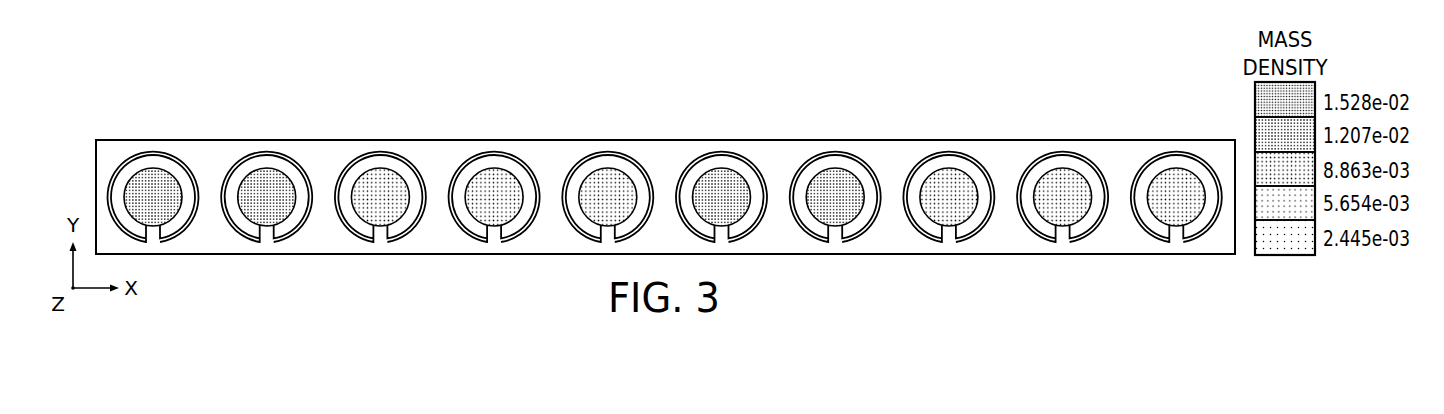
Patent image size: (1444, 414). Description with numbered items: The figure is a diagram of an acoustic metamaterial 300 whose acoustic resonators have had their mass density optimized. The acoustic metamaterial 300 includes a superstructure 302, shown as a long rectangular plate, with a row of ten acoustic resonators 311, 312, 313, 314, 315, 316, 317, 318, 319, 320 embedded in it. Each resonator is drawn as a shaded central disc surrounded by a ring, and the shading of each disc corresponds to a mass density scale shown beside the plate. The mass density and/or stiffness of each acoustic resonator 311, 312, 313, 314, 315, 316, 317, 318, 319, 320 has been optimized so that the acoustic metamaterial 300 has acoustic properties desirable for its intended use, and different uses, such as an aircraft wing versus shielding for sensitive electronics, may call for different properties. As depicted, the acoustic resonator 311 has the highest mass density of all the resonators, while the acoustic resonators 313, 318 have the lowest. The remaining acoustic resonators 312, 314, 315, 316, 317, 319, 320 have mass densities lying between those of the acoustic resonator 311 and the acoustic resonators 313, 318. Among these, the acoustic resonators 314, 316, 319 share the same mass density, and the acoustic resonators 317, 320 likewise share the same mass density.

The acoustic metamaterial 300 is at (344, 59).
The superstructure 302 is at (665, 139).
The acoustic resonator 311 is at (153, 177).
The acoustic resonator 312 is at (267, 177).
The acoustic resonator 313 is at (380, 177).
The acoustic resonator 314 is at (494, 177).
The acoustic resonator 315 is at (608, 177).
The acoustic resonator 316 is at (722, 177).
The acoustic resonator 317 is at (835, 177).
The acoustic resonator 318 is at (949, 177).
The acoustic resonator 319 is at (1063, 177).
The acoustic resonator 320 is at (1176, 177).